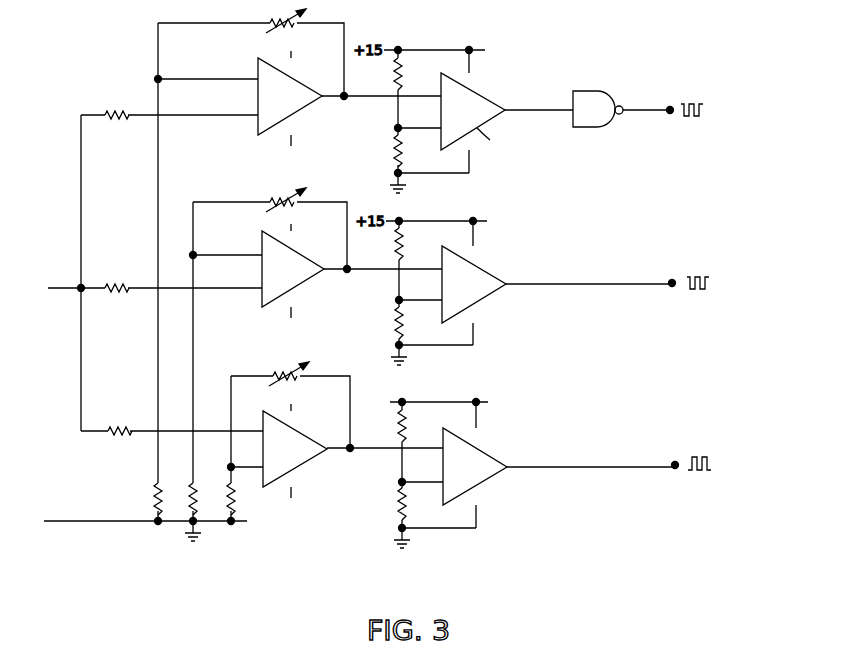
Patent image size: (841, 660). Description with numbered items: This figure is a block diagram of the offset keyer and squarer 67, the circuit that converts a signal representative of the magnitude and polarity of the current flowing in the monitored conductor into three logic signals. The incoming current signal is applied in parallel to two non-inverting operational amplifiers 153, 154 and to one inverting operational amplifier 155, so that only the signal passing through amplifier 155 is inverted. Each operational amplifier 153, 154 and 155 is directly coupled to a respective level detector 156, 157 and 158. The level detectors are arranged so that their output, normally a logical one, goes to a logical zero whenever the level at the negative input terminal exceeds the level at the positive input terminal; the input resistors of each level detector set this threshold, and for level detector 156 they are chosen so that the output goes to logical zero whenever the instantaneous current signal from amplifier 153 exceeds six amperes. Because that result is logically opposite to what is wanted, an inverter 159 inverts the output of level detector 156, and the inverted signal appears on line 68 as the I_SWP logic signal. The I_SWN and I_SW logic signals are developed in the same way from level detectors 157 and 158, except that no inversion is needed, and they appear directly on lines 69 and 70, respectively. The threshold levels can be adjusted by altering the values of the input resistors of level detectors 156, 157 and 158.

The non-inverting operational amplifier 153 is at (311, 105).
The non-inverting operational amplifier 154 is at (312, 277).
The inverting operational amplifier 155 is at (314, 457).
The level detector 156 is at (476, 97).
The level detector 157 is at (490, 297).
The level detector 158 is at (490, 472).
The inverter 159 is at (587, 91).
The line 68 is at (669, 108).
The line 69 is at (671, 281).
The line 70 is at (673, 464).
The offset keyer and squarer 67 is at (379, 596).